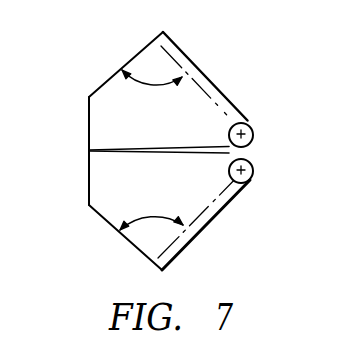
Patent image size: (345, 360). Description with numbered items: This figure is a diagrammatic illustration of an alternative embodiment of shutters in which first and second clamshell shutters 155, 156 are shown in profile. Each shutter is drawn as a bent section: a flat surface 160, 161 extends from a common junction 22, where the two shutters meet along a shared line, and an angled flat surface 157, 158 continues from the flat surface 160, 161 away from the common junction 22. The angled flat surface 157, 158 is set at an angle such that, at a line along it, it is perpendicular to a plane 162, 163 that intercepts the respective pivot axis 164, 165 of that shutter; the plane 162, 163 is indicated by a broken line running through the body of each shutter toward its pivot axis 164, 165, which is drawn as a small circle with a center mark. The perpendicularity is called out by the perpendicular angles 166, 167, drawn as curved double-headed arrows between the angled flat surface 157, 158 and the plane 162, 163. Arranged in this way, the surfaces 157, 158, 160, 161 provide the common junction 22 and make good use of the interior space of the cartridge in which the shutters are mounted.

The common junction 22 is at (88, 150).
The first clamshell shutter 155 is at (186, 55).
The second clamshell shutter 156 is at (186, 246).
The angled flat surface 157 is at (139, 53).
The angled flat surface 158 is at (136, 247).
The flat surface 160 is at (88, 112).
The flat surface 161 is at (89, 193).
The plane 162 is at (215, 86).
The plane 163 is at (216, 214).
The pivot axis 164 is at (253, 130).
The pivot axis 165 is at (253, 175).
The perpendicular angle 166 is at (151, 87).
The perpendicular angle 167 is at (157, 214).